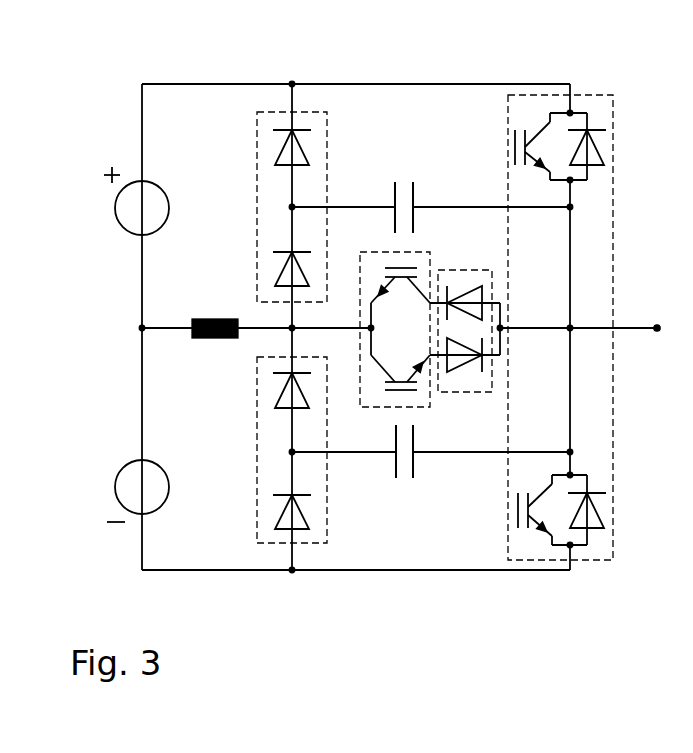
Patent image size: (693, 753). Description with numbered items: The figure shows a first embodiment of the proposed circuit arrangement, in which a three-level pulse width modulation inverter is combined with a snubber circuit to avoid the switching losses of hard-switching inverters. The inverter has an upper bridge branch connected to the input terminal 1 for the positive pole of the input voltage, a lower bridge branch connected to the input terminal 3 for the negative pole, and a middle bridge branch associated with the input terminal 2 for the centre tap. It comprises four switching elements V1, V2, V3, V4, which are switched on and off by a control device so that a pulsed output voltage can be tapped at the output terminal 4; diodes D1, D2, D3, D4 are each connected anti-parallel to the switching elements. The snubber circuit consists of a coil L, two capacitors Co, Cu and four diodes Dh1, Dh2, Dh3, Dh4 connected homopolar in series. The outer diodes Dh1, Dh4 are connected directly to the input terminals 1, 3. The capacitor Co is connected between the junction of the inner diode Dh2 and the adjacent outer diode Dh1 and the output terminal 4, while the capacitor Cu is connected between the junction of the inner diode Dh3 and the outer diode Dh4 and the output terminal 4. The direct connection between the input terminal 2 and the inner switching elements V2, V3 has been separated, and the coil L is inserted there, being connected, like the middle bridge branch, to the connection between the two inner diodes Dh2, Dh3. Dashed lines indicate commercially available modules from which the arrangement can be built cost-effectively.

The input terminal 1 is at (125, 82).
The input terminal 2 is at (139, 321).
The input terminal 3 is at (138, 570).
The output terminal 4 is at (596, 327).
The coil L is at (215, 348).
The outer diode Dh1 is at (253, 149).
The inner diode Dh2 is at (253, 270).
The inner diode Dh3 is at (253, 396).
The outer diode Dh4 is at (253, 512).
The capacitor Co is at (431, 187).
The capacitor Cu is at (431, 472).
The switching element V1 is at (528, 146).
The switching element V2 is at (390, 271).
The switching element V3 is at (390, 387).
The switching element V4 is at (529, 510).
The diode D1 is at (611, 146).
The diode D2 is at (464, 281).
The diode D3 is at (465, 383).
The diode D4 is at (613, 510).